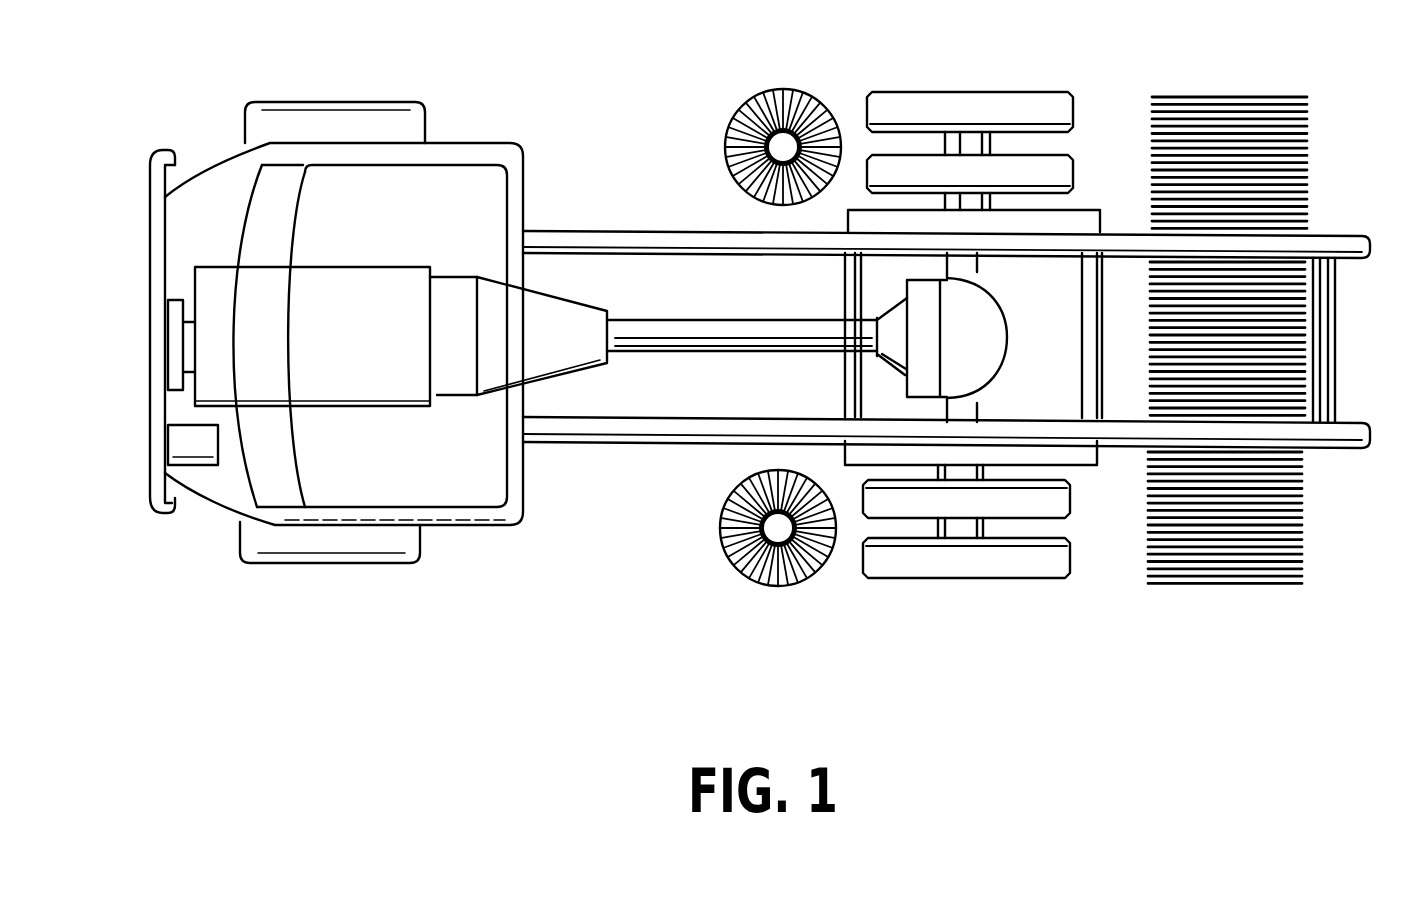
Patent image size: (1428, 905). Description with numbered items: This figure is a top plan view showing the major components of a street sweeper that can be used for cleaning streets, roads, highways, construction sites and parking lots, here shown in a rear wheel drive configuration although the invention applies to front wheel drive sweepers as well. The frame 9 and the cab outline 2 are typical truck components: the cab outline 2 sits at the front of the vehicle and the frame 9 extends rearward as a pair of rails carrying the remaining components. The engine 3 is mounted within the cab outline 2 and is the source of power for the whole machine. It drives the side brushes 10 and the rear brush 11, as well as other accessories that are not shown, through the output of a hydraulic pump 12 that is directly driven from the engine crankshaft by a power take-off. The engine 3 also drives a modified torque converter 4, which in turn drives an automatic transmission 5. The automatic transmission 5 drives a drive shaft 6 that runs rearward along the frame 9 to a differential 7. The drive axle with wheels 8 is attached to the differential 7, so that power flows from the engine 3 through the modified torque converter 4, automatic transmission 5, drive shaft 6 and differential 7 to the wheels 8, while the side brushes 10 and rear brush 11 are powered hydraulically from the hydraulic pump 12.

The cab outline 2 is at (523, 520).
The engine 3 is at (360, 390).
The modified torque converter 4 is at (450, 293).
The automatic transmission 5 is at (577, 308).
The drive shaft 6 is at (713, 343).
The differential 7 is at (1008, 340).
The wheels 8 is at (1075, 107).
The frame 9 is at (1362, 236).
The side brushes 10 is at (740, 107).
The rear brush 11 is at (1250, 95).
The hydraulic pump 12 is at (193, 447).